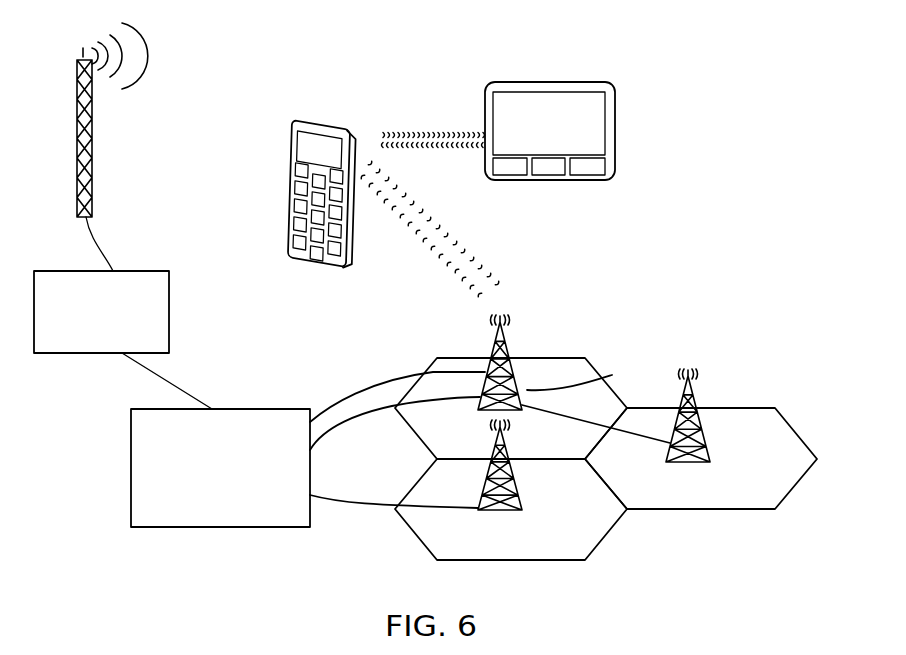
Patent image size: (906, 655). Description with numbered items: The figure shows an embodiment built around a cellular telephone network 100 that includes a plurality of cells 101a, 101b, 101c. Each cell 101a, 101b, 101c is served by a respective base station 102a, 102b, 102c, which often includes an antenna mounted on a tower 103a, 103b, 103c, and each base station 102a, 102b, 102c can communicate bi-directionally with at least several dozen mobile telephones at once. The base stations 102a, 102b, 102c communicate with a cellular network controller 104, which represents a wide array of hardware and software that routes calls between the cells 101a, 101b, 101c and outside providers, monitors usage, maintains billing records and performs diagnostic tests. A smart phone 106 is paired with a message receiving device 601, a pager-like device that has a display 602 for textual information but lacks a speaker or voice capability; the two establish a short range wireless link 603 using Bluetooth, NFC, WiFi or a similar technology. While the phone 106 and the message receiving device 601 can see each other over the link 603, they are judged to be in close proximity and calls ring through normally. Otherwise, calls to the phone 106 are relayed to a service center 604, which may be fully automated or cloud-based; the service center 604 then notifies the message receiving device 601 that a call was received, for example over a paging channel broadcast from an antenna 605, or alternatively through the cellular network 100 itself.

The cellular telephone network 100 is at (662, 305).
The cell 101a is at (442, 362).
The cell 101b is at (760, 495).
The cell 101c is at (437, 532).
The base station 102a is at (485, 392).
The base station 102b is at (713, 450).
The base station 102c is at (500, 513).
The tower 103a is at (487, 345).
The tower 103b is at (700, 422).
The tower 103c is at (488, 468).
The cellular network controller 104 is at (143, 516).
The smart phone 106 is at (287, 143).
The message receiving device 601 is at (507, 93).
The display 602 is at (549, 123).
The short range wireless link 603 is at (420, 132).
The service center 604 is at (141, 278).
The antenna 605 is at (92, 158).